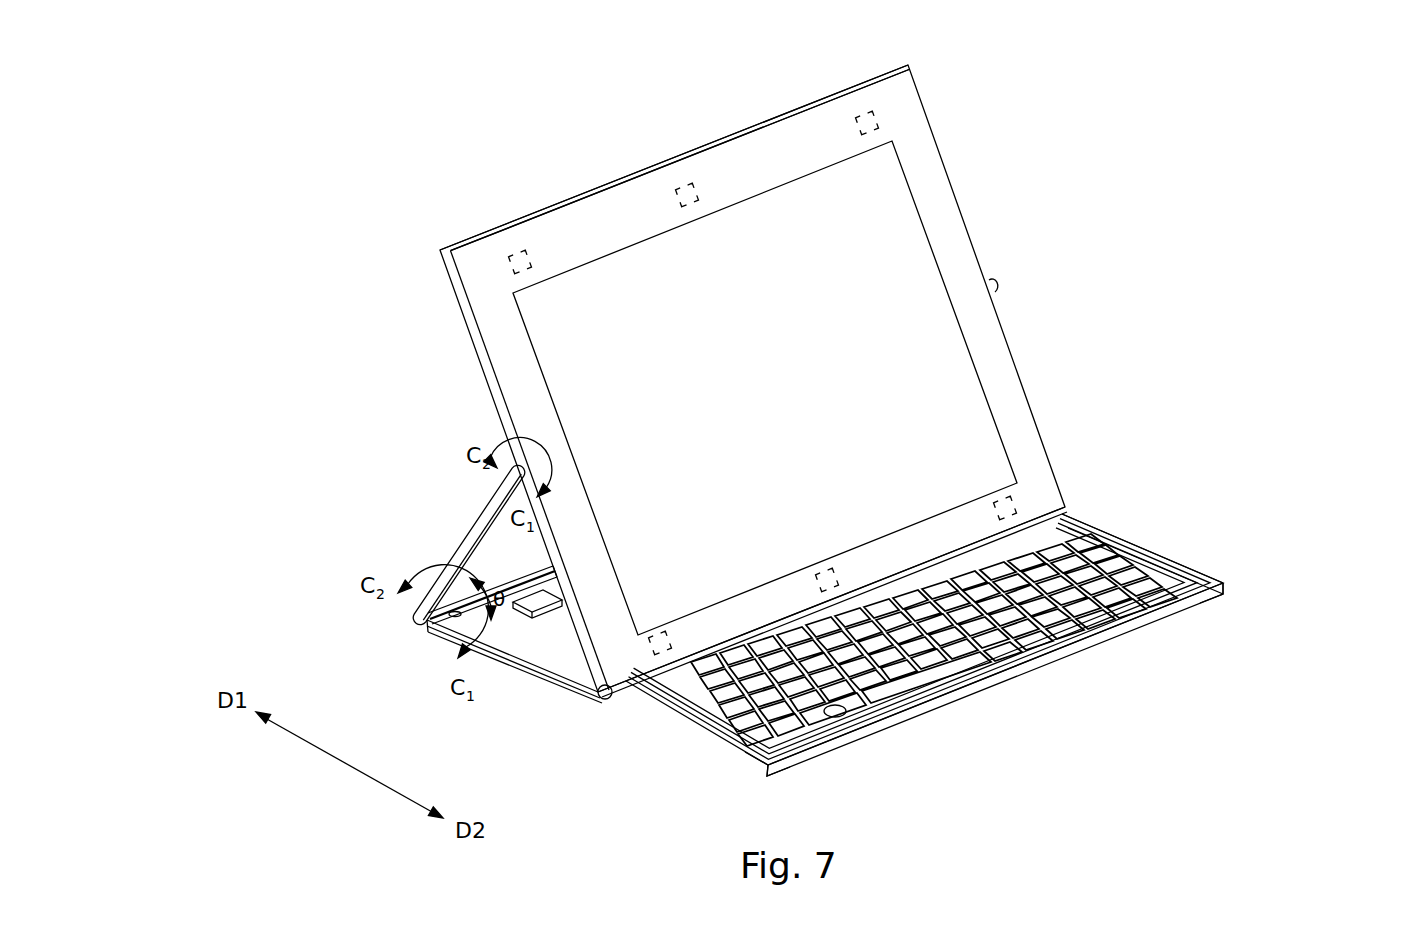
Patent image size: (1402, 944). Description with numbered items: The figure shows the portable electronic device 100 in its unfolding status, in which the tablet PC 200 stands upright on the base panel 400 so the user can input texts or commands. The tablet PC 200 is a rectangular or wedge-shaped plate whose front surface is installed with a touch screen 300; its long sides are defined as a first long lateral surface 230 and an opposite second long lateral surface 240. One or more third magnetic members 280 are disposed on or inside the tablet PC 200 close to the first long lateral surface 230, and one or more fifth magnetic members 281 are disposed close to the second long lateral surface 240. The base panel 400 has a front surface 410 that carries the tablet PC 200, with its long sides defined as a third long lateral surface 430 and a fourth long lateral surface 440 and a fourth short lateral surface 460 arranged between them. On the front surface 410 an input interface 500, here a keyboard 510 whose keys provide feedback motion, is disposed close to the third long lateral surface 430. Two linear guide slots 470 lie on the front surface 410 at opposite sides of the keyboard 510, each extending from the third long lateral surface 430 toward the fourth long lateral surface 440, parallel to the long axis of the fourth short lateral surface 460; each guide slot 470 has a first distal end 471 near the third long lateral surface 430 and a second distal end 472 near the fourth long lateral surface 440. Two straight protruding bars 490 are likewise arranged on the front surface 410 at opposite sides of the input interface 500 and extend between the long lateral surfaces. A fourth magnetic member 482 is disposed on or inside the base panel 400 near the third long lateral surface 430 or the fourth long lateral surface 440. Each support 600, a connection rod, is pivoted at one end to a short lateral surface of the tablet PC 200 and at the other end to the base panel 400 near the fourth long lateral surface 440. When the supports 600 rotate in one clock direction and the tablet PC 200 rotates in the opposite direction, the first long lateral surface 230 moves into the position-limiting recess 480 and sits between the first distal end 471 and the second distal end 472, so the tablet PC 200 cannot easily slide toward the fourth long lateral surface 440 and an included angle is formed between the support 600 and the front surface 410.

The portable electronic device 100 is at (164, 63).
The tablet PC 200 is at (944, 92).
The first long lateral surface 230 is at (1046, 516).
The second long lateral surface 240 is at (800, 107).
The third magnetic member 280 is at (685, 183).
The fifth magnetic member 281 is at (660, 655).
The touch screen 300 is at (905, 250).
The base panel 400 is at (1184, 625).
The front surface 410 is at (510, 624).
The third long lateral surface 430 is at (1040, 657).
The fourth long lateral surface 440 is at (508, 568).
The fourth short lateral surface 460 is at (1146, 548).
The guide slot 470 is at (1222, 571).
The first distal end 471 is at (762, 770).
The second distal end 472 is at (430, 614).
The position-limiting recess 480 is at (600, 700).
The fourth magnetic member 482 is at (548, 617).
The protruding bar 490 is at (1087, 538).
The input interface 500 is at (952, 683).
The keyboard 510 is at (897, 695).
The support 600 is at (437, 549).